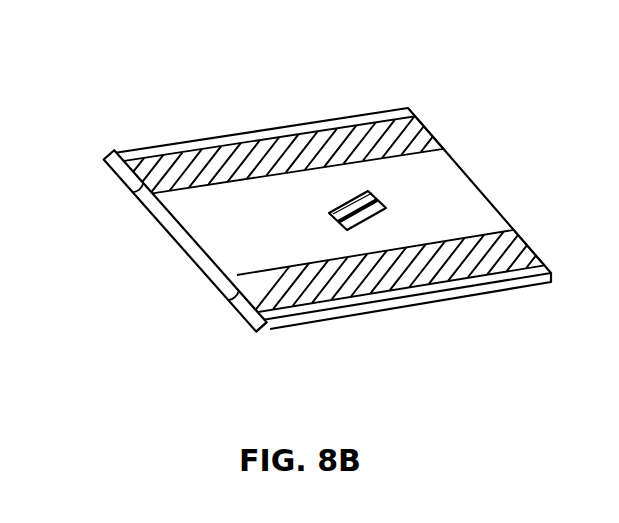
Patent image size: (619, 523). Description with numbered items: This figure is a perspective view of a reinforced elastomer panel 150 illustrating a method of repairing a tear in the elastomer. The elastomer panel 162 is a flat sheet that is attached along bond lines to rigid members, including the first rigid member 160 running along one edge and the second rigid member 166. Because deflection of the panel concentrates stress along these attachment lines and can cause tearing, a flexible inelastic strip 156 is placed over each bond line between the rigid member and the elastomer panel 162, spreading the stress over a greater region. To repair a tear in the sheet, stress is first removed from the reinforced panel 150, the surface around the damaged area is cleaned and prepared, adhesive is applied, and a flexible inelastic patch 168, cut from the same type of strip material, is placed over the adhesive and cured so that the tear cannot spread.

The reinforced elastomer panel 150 is at (308, 54).
The flexible inelastic strip 156 is at (422, 130).
The first rigid member 160 is at (107, 158).
The elastomer panel 162 is at (462, 188).
The second rigid member 166 is at (272, 327).
The flexible inelastic patch 168 is at (371, 190).